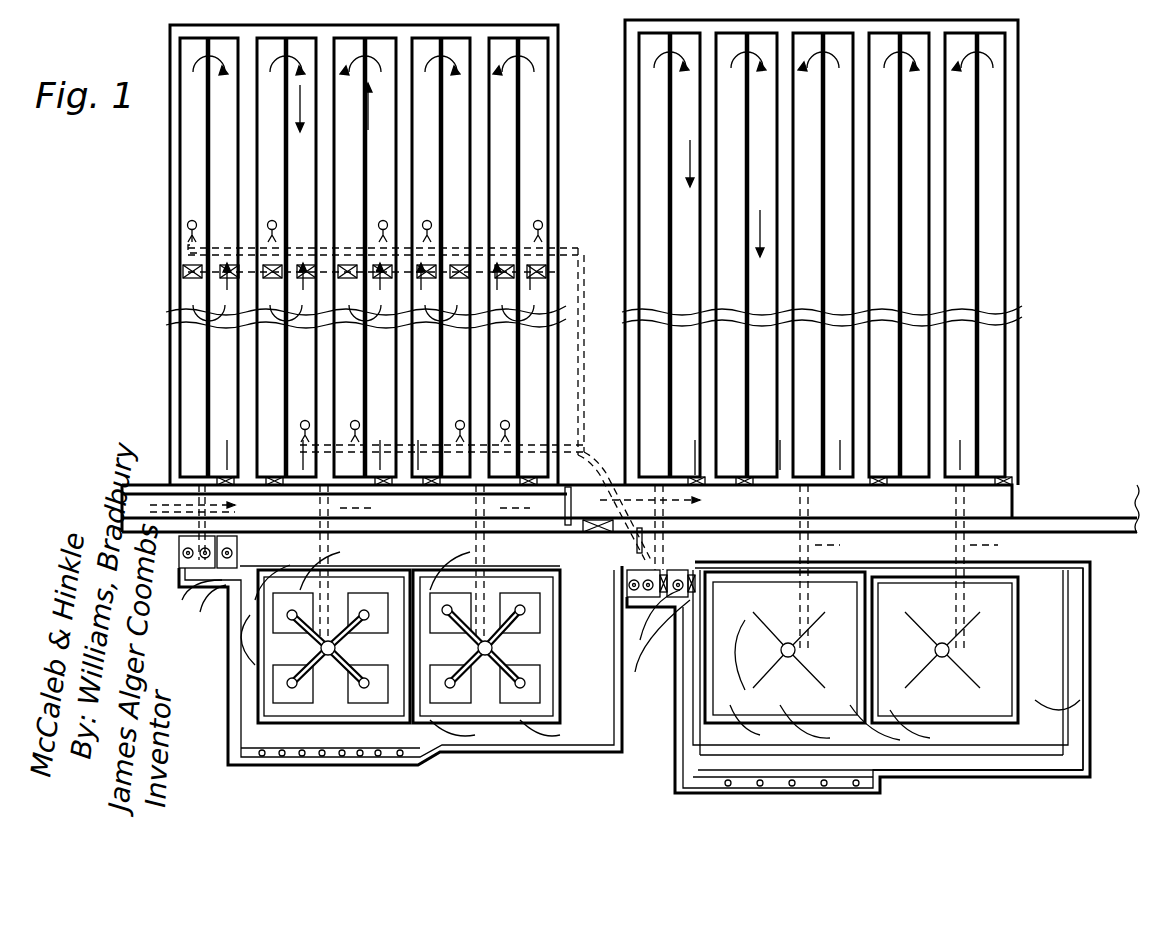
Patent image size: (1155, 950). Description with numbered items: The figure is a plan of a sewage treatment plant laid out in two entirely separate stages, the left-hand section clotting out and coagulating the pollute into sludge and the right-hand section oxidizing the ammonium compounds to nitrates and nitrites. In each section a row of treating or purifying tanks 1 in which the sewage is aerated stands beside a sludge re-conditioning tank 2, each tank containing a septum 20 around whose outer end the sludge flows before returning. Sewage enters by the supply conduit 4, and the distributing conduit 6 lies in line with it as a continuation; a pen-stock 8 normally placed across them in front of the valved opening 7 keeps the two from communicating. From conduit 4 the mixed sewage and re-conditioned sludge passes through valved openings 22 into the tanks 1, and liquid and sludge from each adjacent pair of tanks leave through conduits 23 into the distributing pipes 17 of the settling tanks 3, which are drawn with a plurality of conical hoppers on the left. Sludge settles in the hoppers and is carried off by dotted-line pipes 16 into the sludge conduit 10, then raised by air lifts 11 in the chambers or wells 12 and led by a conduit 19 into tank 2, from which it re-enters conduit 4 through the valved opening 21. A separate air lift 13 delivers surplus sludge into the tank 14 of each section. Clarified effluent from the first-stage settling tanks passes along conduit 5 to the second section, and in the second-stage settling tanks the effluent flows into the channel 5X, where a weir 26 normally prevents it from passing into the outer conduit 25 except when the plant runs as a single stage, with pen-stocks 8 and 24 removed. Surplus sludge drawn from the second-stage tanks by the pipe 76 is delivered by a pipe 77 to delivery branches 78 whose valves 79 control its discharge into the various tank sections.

The treating or purifying tank 1 is at (631, 255).
The sludge re-aeration or re-conditioning tank 2 is at (440, 255).
The settling tank 3 is at (660, 662).
The sewage supply conduit 4 is at (150, 487).
The effluent conduit 5 is at (400, 572).
The channel 5X is at (738, 655).
The distributing conduit 6 is at (789, 501).
The valved opening 7 is at (598, 533).
The pen-stock 8 is at (572, 506).
The sludge conduit 10 is at (228, 694).
The air lift 11 is at (183, 560).
The chamber or well 12 is at (190, 546).
The surplus sludge air lift 13 is at (182, 600).
The surplus sludge tank 14 is at (445, 630).
The sludge pipe 16 is at (300, 758).
The distributing pipe 17 is at (336, 648).
The sludge conduit 19 is at (437, 506).
The septum 20 is at (207, 135).
The valved opening 21 is at (226, 486).
The valved opening 22 is at (639, 484).
The conduit 23 is at (671, 563).
The pen-stock 24 is at (635, 545).
The outer conduit 25 is at (1088, 690).
The weir 26 is at (940, 755).
The surplus sludge pipe 76 is at (582, 440).
The sludge delivery pipe 77 is at (318, 248).
The delivery branch 78 is at (187, 222).
The valve 79 is at (190, 243).